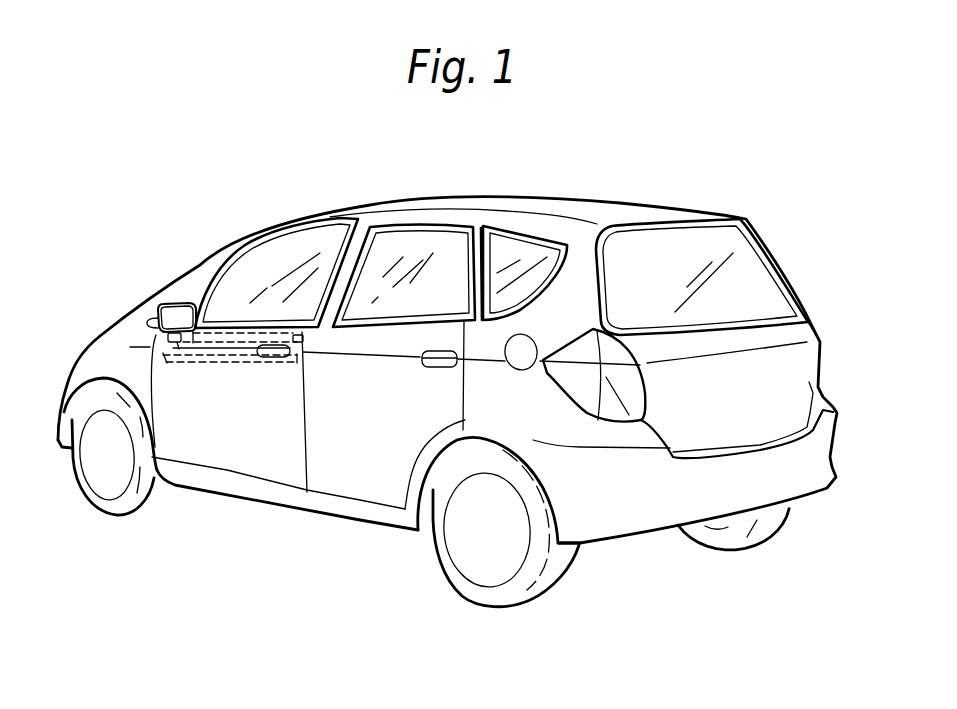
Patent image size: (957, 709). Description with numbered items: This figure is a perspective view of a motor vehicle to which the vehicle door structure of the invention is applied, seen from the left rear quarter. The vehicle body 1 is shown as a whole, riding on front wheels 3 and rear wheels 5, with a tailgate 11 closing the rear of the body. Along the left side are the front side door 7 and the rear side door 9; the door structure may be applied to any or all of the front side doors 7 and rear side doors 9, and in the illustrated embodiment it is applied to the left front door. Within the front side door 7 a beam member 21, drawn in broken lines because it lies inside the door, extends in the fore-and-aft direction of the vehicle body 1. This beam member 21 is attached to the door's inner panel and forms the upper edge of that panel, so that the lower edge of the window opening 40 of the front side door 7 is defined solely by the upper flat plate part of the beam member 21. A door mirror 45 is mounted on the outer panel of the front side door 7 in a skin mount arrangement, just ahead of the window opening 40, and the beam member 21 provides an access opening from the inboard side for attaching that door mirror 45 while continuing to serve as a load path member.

The vehicle body 1 is at (520, 400).
The front wheels 3 is at (138, 513).
The rear wheels 5 is at (558, 576).
The front side door 7 is at (230, 470).
The rear side doors 9 is at (353, 483).
The tailgate 11 is at (805, 360).
The beam member 21 is at (218, 332).
The window opening 40 is at (285, 303).
The door mirror 45 is at (165, 312).